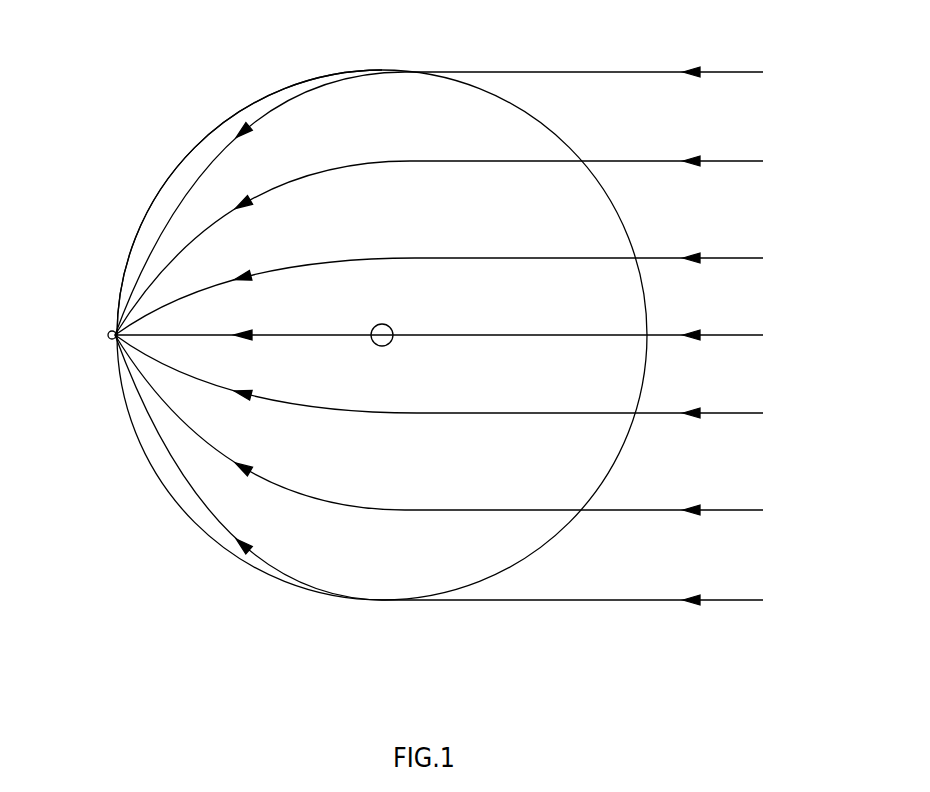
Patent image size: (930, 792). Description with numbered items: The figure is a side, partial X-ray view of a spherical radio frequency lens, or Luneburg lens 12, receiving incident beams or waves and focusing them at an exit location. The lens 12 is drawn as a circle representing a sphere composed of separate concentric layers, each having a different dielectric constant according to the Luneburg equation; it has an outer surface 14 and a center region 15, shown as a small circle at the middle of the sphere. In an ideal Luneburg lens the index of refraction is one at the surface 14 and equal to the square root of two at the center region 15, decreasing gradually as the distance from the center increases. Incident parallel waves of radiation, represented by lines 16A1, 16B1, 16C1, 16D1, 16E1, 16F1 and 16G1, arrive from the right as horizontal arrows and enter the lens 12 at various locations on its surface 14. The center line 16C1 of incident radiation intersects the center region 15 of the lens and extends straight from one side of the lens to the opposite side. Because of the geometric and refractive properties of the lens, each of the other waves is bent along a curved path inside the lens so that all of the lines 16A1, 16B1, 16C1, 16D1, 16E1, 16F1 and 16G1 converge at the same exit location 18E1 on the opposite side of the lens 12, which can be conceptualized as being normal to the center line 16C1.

The Luneburg lens 12 is at (382, 302).
The surface 14 is at (249, 175).
The center region 15 is at (439, 311).
The exit location 18E1 is at (71, 357).
The line representing incident parallel wave 16A1 is at (472, 175).
The line representing incident parallel wave 16B1 is at (470, 215).
The center line of incident radiation 16C1 is at (470, 266).
The line representing incident parallel wave 16D1 is at (471, 307).
The line representing incident parallel wave 16E1 is at (469, 376).
The line representing incident parallel wave 16F1 is at (469, 425).
The line representing incident parallel wave 16G1 is at (471, 470).